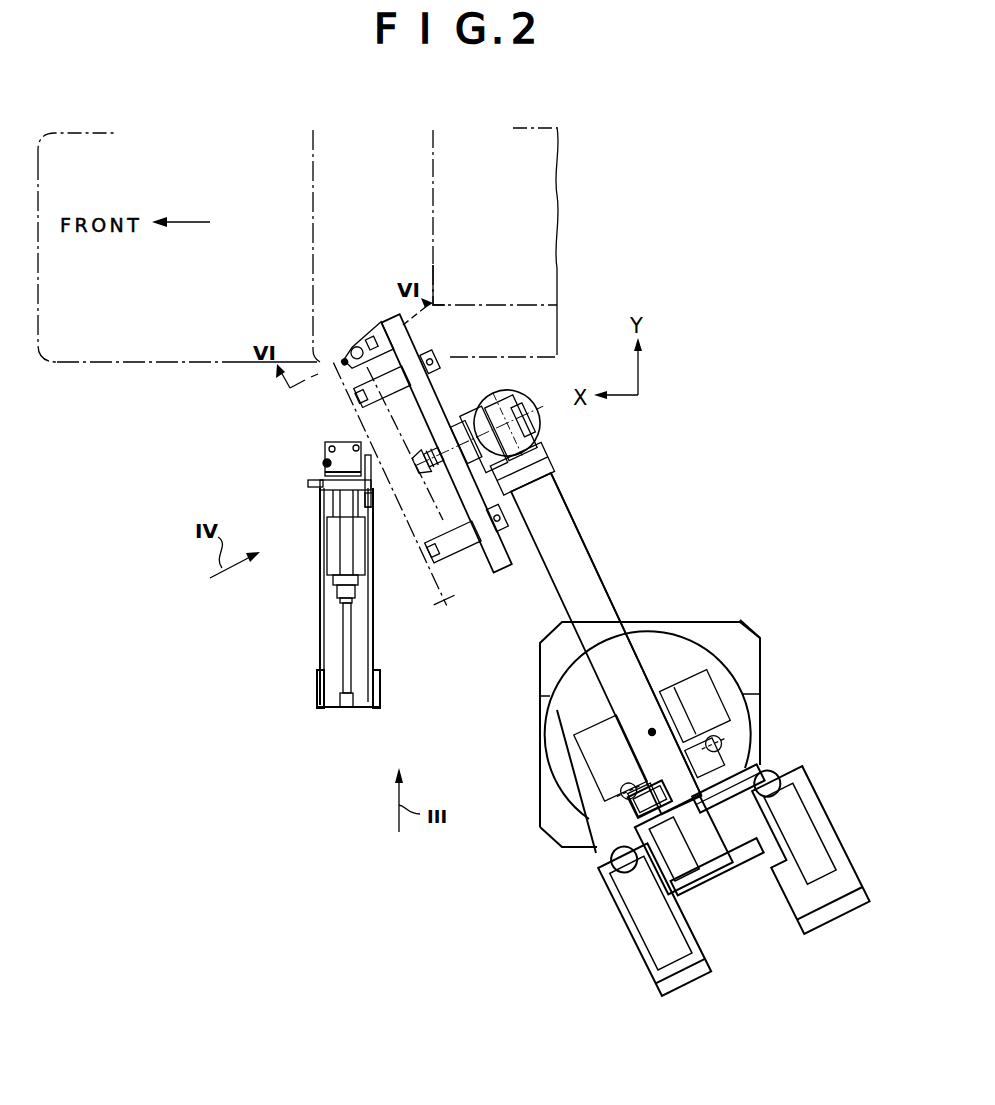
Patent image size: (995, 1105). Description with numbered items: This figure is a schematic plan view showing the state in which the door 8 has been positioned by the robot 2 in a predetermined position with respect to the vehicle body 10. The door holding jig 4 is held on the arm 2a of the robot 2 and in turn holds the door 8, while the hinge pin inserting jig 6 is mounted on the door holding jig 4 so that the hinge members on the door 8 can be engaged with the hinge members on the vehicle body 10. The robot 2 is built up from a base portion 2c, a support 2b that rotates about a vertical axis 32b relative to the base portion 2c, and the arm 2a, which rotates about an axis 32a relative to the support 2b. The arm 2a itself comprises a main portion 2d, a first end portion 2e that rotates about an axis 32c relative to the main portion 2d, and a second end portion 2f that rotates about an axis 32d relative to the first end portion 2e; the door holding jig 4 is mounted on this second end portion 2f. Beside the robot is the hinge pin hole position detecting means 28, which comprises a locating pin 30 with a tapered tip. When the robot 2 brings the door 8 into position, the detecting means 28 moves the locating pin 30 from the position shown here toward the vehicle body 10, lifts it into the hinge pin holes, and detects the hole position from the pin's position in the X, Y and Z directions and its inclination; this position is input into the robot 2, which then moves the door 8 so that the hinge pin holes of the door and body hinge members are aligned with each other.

The robot 2 is at (721, 603).
The arm 2a is at (611, 585).
The support 2b is at (732, 675).
The base portion 2c is at (752, 630).
The main portion 2d is at (590, 547).
The first end portion 2e is at (518, 398).
The second end portion 2f is at (460, 432).
The door holding jig 4 is at (450, 380).
The hinge pin inserting jig 6 is at (357, 326).
The door 8 is at (432, 585).
The vehicle body 10 is at (127, 363).
The hinge pin hole position detecting means 28 is at (314, 613).
The locating pin 30 is at (332, 442).
The axis 32a is at (722, 748).
The vertical axis 32b is at (652, 732).
The axis 32c is at (480, 383).
The axis 32d is at (533, 405).